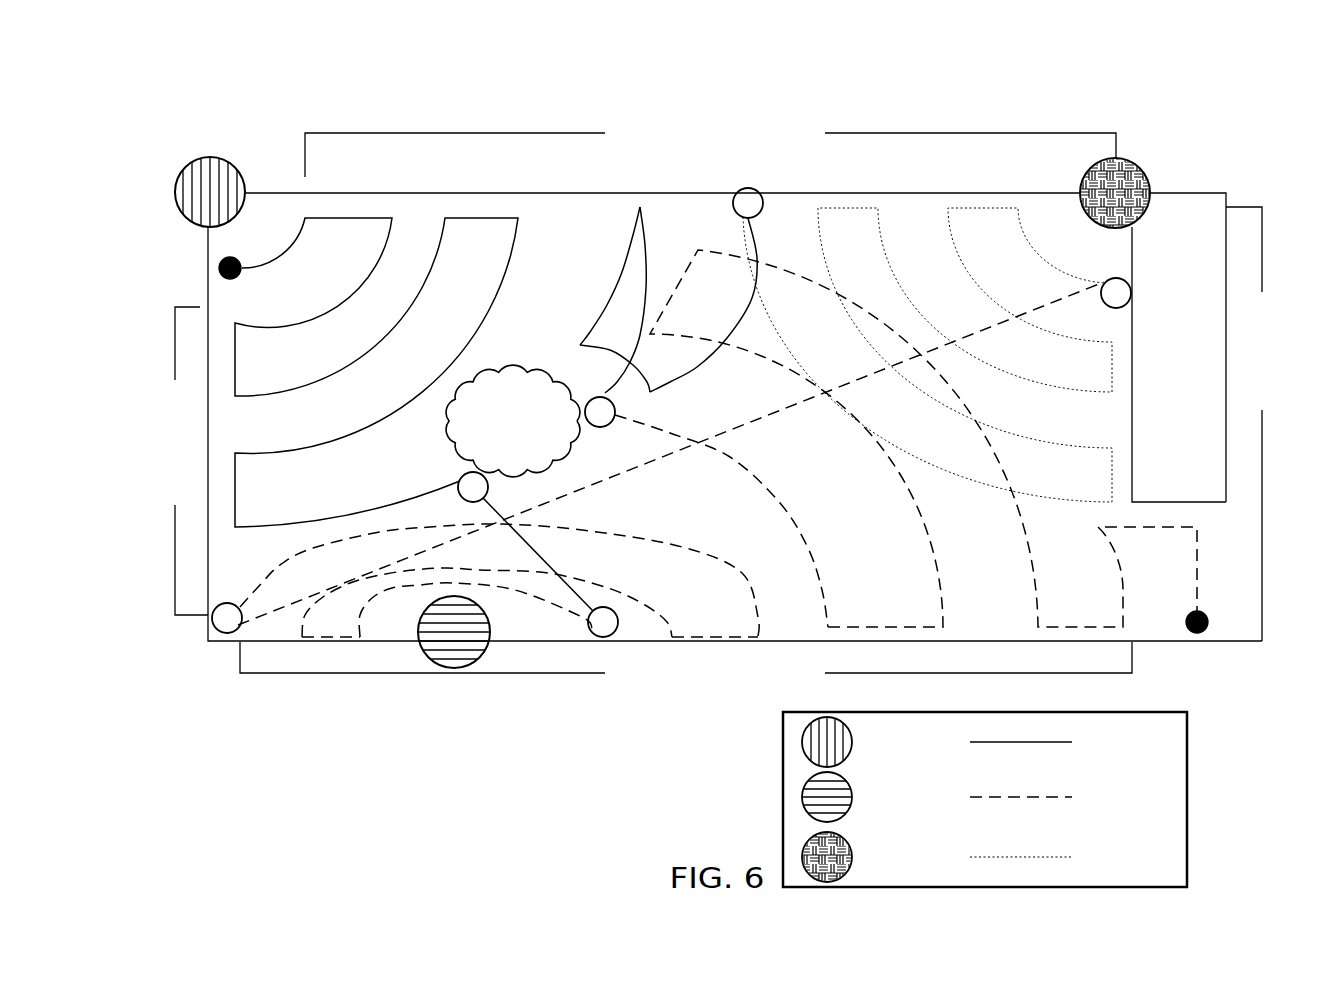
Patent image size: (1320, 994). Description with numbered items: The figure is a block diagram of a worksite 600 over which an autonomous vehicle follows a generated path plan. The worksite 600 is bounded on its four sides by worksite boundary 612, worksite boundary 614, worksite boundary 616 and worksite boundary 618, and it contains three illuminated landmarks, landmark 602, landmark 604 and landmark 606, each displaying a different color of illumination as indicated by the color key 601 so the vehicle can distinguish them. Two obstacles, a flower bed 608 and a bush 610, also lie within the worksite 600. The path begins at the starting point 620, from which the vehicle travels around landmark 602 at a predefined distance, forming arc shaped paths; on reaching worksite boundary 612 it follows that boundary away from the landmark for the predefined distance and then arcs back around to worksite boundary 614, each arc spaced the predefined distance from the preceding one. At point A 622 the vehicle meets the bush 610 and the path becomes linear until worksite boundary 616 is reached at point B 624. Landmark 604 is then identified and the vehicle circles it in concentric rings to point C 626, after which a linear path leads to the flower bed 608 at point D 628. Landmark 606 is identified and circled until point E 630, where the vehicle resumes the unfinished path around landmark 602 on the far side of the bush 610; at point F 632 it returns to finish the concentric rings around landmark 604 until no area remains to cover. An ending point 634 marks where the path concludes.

The worksite 600 is at (278, 127).
The color key 601 is at (1192, 804).
The landmark 602 is at (184, 163).
The landmark 604 is at (455, 672).
The landmark 606 is at (1146, 167).
The flower bed 608 is at (1159, 399).
The bush 610 is at (494, 451).
The worksite boundary 612 is at (710, 124).
The worksite boundary 614 is at (163, 497).
The worksite boundary 616 is at (712, 690).
The worksite boundary 618 is at (1272, 298).
The starting point 620 is at (214, 273).
The point A 622 is at (456, 480).
The point B 624 is at (617, 608).
The point C 626 is at (214, 631).
The point D 628 is at (1134, 283).
The point E 630 is at (764, 194).
The point F 632 is at (620, 412).
The ending point 634 is at (1208, 636).